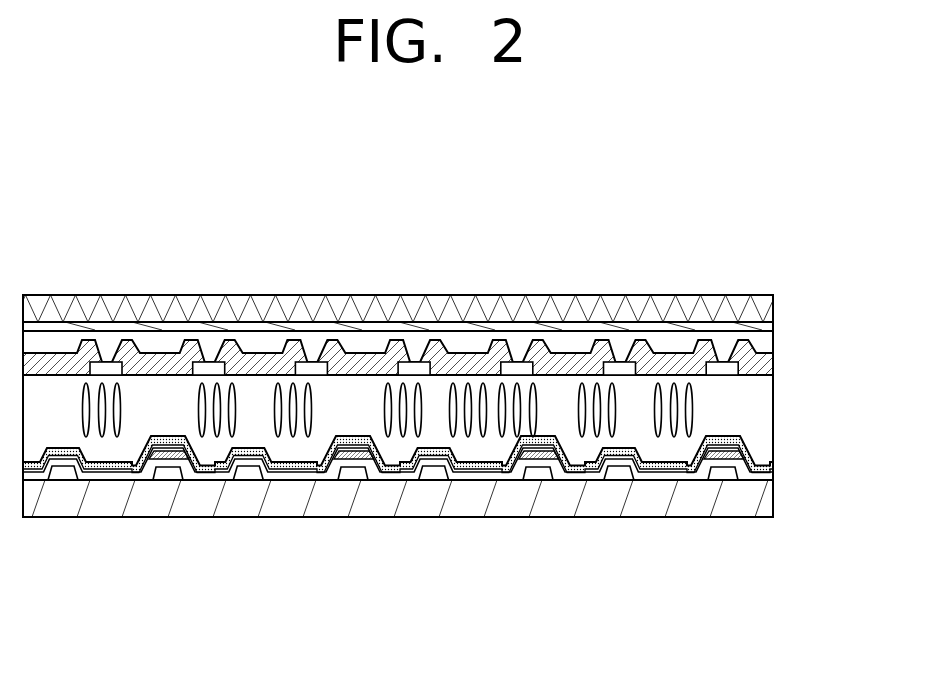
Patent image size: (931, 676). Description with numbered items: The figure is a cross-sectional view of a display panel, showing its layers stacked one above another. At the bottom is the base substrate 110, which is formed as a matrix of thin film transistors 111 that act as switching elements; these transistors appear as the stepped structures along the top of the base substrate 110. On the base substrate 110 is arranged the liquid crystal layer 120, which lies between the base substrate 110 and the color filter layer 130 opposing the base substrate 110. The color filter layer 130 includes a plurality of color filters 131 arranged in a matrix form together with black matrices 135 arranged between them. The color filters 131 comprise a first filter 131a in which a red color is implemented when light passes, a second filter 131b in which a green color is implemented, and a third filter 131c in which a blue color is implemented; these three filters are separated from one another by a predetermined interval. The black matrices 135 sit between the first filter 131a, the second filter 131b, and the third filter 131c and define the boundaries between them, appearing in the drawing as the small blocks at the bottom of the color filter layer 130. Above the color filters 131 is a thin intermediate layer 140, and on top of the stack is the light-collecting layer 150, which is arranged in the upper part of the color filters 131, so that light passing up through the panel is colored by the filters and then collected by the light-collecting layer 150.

The base substrate 110 is at (767, 497).
The thin film transistors 111 is at (752, 455).
The liquid crystal layer 120 is at (795, 410).
The color filter layer 130 is at (449, 494).
The color filters 131 is at (398, 494).
The first filter 131a is at (153, 366).
The second filter 131b is at (257, 365).
The third filter 131c is at (363, 365).
The black matrices 135 is at (420, 365).
The overcoat layer 140 is at (768, 327).
The light-collecting layer 150 is at (795, 309).